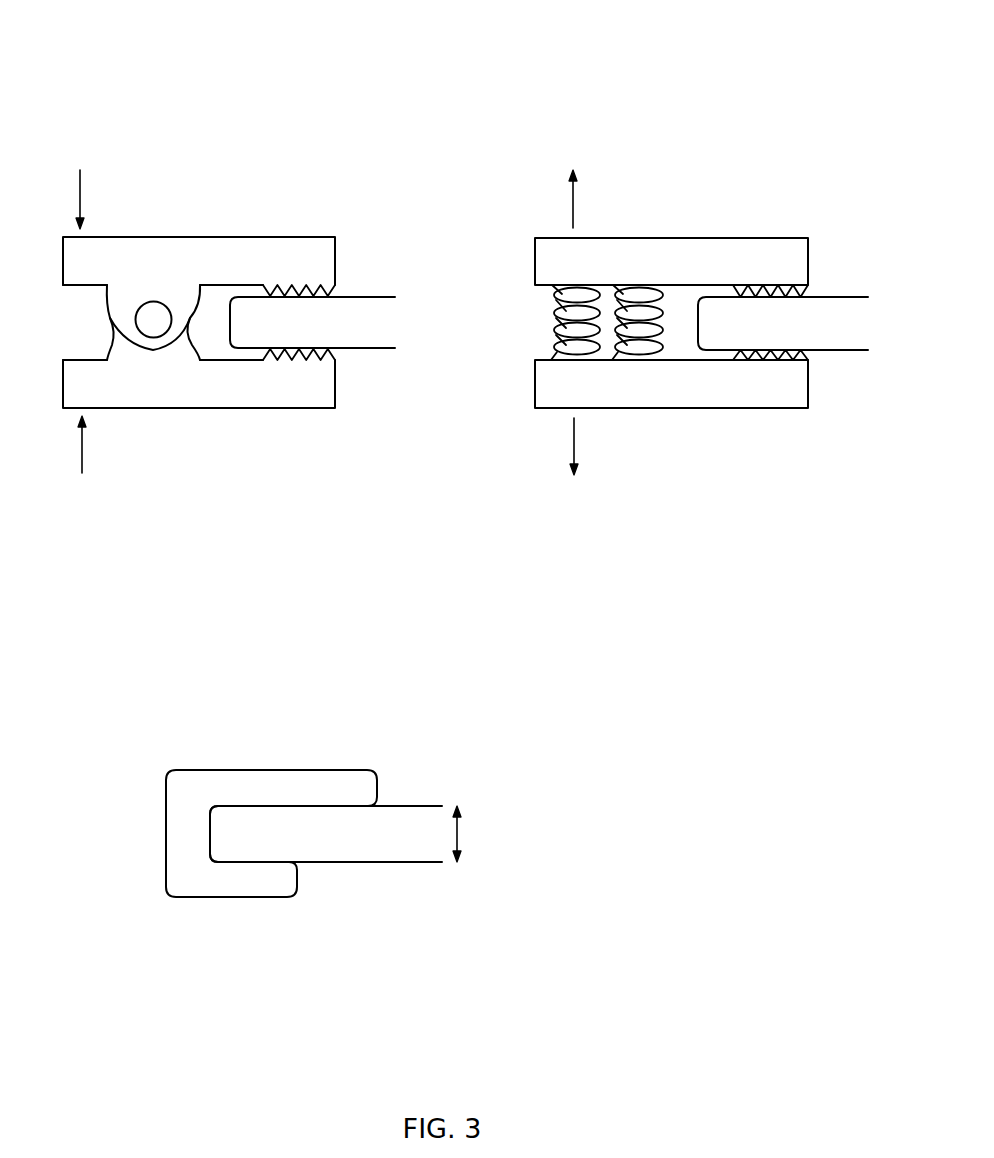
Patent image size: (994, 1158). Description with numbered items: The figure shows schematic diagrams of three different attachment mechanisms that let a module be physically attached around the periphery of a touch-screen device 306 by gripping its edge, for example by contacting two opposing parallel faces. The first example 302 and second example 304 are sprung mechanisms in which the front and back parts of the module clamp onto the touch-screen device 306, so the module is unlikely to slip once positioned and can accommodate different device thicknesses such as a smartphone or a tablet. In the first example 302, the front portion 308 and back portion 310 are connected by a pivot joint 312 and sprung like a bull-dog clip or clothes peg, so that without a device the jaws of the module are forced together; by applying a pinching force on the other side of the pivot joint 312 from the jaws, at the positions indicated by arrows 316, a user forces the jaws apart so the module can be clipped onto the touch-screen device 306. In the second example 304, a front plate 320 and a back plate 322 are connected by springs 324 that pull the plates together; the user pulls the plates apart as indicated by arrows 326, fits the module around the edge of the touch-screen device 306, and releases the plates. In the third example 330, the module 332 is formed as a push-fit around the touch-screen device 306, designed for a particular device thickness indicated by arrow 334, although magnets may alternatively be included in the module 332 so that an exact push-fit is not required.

The first example 302 is at (198, 136).
The second example 304 is at (685, 133).
The touch-screen device 306 is at (539, 579).
The front portion 308 is at (213, 240).
The back portion 310 is at (232, 397).
The pivot joint 312 is at (155, 322).
The arrows 316 is at (81, 324).
The front plate 320 is at (652, 250).
The back plate 322 is at (659, 397).
The springs 324 is at (540, 325).
The arrows 326 is at (573, 324).
The third example 330 is at (120, 762).
The module 332 is at (238, 787).
The arrow 334 is at (476, 834).